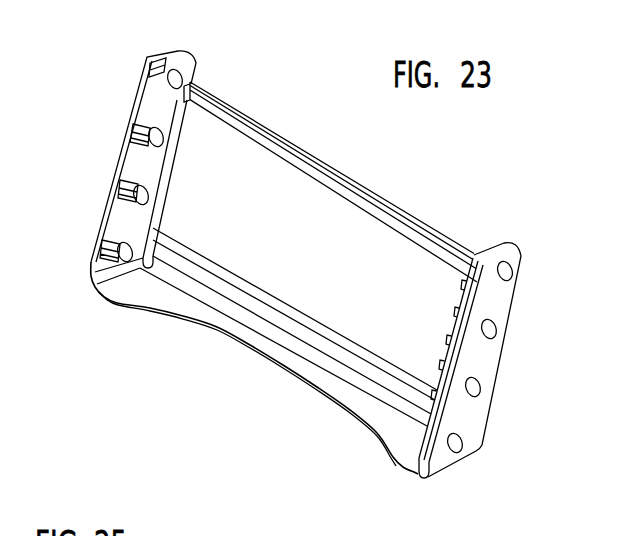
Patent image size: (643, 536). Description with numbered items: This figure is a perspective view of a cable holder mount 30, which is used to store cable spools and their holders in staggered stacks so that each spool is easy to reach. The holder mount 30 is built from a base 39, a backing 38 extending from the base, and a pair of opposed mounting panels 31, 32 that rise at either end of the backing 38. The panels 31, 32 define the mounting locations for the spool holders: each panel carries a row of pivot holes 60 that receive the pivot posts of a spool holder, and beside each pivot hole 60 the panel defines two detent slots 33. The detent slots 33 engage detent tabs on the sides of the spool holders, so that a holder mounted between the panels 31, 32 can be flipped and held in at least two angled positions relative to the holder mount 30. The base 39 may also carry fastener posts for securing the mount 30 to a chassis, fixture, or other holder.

The cable holder mount 30 is at (268, 89).
The mounting panel 31 is at (490, 294).
The mounting panel 32 is at (160, 108).
The detent slots 33 is at (142, 127).
The backing 38 is at (329, 256).
The base 39 is at (149, 289).
The pivot holes 60 is at (463, 440).